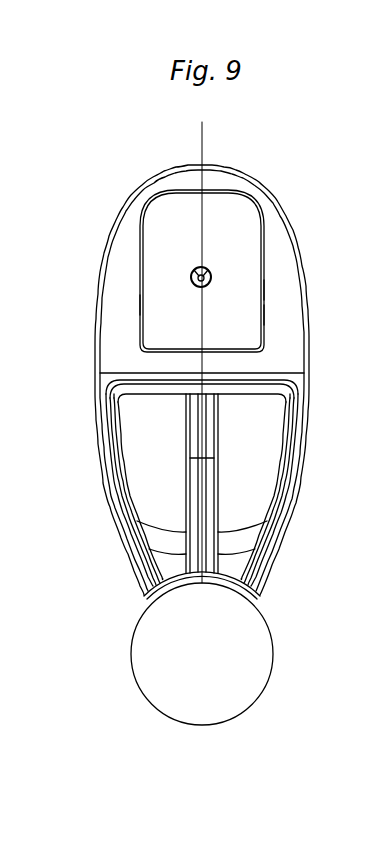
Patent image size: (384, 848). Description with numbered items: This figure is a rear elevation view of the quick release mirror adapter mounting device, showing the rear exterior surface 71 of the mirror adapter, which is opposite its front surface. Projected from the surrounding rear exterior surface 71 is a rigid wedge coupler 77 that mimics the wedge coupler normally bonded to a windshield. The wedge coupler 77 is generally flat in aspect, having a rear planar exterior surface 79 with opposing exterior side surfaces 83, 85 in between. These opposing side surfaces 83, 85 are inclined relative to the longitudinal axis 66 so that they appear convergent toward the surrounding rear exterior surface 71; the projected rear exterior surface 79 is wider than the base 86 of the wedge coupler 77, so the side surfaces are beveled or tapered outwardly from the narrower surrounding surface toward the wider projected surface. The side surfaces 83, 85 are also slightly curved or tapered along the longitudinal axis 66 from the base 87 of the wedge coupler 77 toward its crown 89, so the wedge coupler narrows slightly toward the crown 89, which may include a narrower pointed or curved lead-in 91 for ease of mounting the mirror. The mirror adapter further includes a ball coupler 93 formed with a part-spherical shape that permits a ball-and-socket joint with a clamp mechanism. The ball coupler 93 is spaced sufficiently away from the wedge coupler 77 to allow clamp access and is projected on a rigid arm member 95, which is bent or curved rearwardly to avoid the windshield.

The longitudinal axis 66 is at (204, 143).
The crown 89 is at (190, 188).
The lead-in 91 is at (253, 195).
The wedge coupler 77 is at (264, 222).
The rear exterior surface 71 is at (277, 257).
The base 86 is at (268, 288).
The side surface 85 is at (268, 313).
The side surface 83 is at (139, 305).
The rear planar exterior surface 79 is at (187, 255).
The base 87 is at (231, 356).
The arm member 95 is at (285, 540).
The ball coupler 93 is at (212, 670).